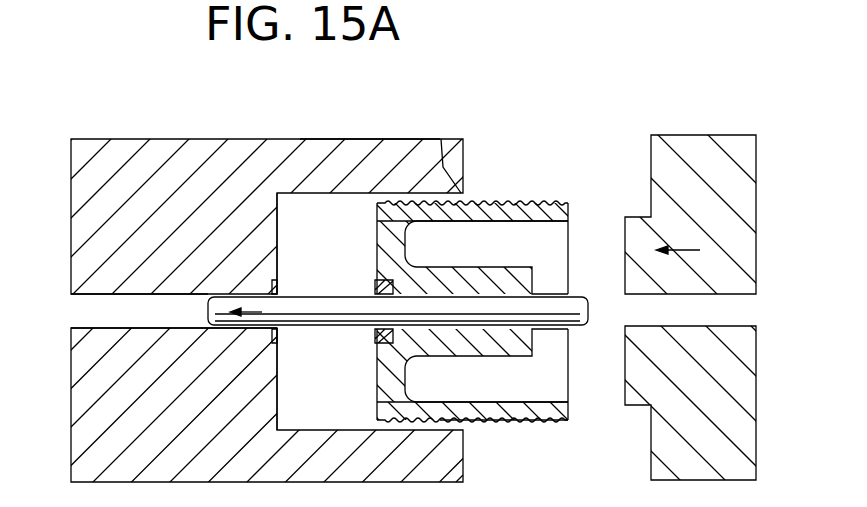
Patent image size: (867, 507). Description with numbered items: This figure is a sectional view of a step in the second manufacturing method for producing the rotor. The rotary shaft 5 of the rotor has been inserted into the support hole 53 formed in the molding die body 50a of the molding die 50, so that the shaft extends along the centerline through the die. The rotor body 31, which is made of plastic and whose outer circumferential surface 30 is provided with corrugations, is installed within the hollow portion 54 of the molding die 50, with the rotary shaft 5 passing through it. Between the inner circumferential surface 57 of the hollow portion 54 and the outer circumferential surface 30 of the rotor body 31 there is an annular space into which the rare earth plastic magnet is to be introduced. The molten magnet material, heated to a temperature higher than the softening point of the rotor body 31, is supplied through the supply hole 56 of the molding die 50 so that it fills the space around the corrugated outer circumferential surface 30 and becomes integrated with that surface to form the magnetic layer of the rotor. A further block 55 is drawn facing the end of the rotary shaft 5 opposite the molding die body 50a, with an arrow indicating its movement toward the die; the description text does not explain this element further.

The rotary shaft 5 is at (326, 329).
The outer circumferential surface 30 is at (562, 204).
The rotor body 31 is at (563, 425).
The molding die 50 is at (291, 139).
The molding die body 50a is at (380, 139).
The support hole 53 is at (157, 300).
The hollow portion 54 is at (346, 249).
The opposing mold block 55 is at (689, 135).
The supply hole 56 is at (445, 167).
The inner circumferential surface 57 is at (318, 428).